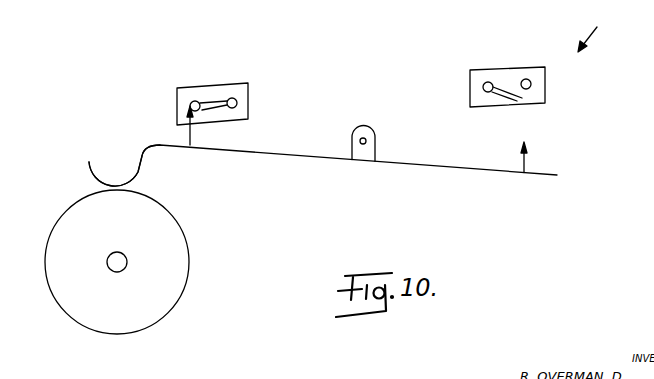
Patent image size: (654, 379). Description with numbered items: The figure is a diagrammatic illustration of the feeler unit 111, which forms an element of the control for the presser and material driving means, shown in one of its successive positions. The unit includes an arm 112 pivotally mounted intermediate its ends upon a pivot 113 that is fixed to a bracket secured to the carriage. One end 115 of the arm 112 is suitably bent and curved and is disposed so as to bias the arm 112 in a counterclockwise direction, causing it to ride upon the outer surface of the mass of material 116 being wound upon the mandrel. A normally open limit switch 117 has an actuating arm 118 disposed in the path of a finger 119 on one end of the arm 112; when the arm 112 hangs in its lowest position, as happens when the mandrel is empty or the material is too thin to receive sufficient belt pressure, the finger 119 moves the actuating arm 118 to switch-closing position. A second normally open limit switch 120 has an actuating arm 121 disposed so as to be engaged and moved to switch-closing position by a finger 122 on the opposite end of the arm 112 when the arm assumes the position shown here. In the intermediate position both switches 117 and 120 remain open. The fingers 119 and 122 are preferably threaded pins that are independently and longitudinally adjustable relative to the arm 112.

The feeler unit 111 is at (601, 33).
The arm 112 is at (402, 164).
The pivot 113 is at (368, 136).
The end of the arm 115 is at (140, 173).
The mass of material 116 is at (188, 238).
The limit switch 117 is at (510, 66).
The actuating arm 118 is at (512, 97).
The finger 119 is at (528, 157).
The second limit switch 120 is at (215, 85).
The actuating arm 121 is at (213, 111).
The finger 122 is at (188, 136).